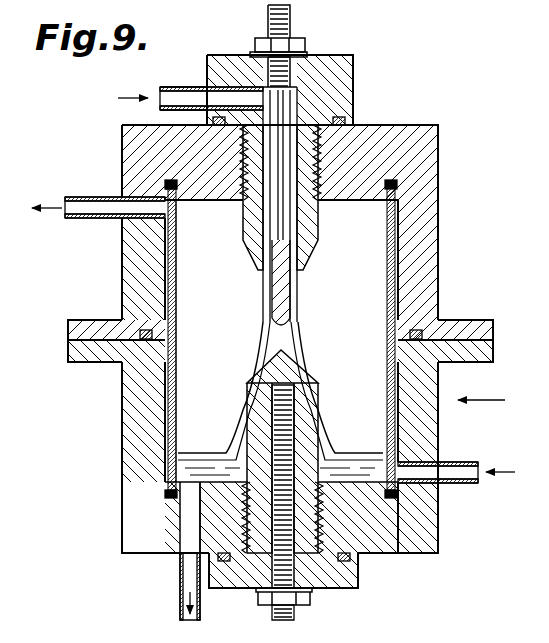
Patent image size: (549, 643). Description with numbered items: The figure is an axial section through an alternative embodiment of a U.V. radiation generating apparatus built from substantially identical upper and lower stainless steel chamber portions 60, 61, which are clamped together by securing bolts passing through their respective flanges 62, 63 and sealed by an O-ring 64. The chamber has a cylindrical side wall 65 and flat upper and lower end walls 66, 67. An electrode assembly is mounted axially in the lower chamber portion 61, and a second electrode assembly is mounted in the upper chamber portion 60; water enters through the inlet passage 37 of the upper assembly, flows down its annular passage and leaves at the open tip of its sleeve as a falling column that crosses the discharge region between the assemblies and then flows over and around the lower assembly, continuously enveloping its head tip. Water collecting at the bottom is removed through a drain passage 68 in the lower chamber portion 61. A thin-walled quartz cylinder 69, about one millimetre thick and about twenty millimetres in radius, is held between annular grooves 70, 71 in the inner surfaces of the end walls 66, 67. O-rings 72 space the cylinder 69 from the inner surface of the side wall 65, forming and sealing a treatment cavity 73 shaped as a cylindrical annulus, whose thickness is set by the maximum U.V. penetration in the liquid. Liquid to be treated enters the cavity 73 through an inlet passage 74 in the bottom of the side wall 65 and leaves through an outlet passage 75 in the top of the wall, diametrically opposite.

The inlet passage 37 is at (246, 100).
The upper chamber portion 60 is at (452, 151).
The lower chamber portion 61 is at (320, 457).
The flange 62 is at (472, 328).
The flange 63 is at (463, 348).
The O-ring 64 is at (143, 333).
The cylindrical side wall 65 is at (165, 246).
The upper end wall 66 is at (195, 198).
The lower end wall 67 is at (366, 486).
The drain passage 68 is at (188, 513).
The quartz cylinder 69 is at (392, 238).
The annular groove 70 is at (167, 184).
The annular groove 71 is at (166, 485).
The O-rings 72 is at (396, 186).
The treatment cavity 73 is at (172, 386).
The inlet passage 74 is at (459, 470).
The outlet passage 75 is at (84, 205).